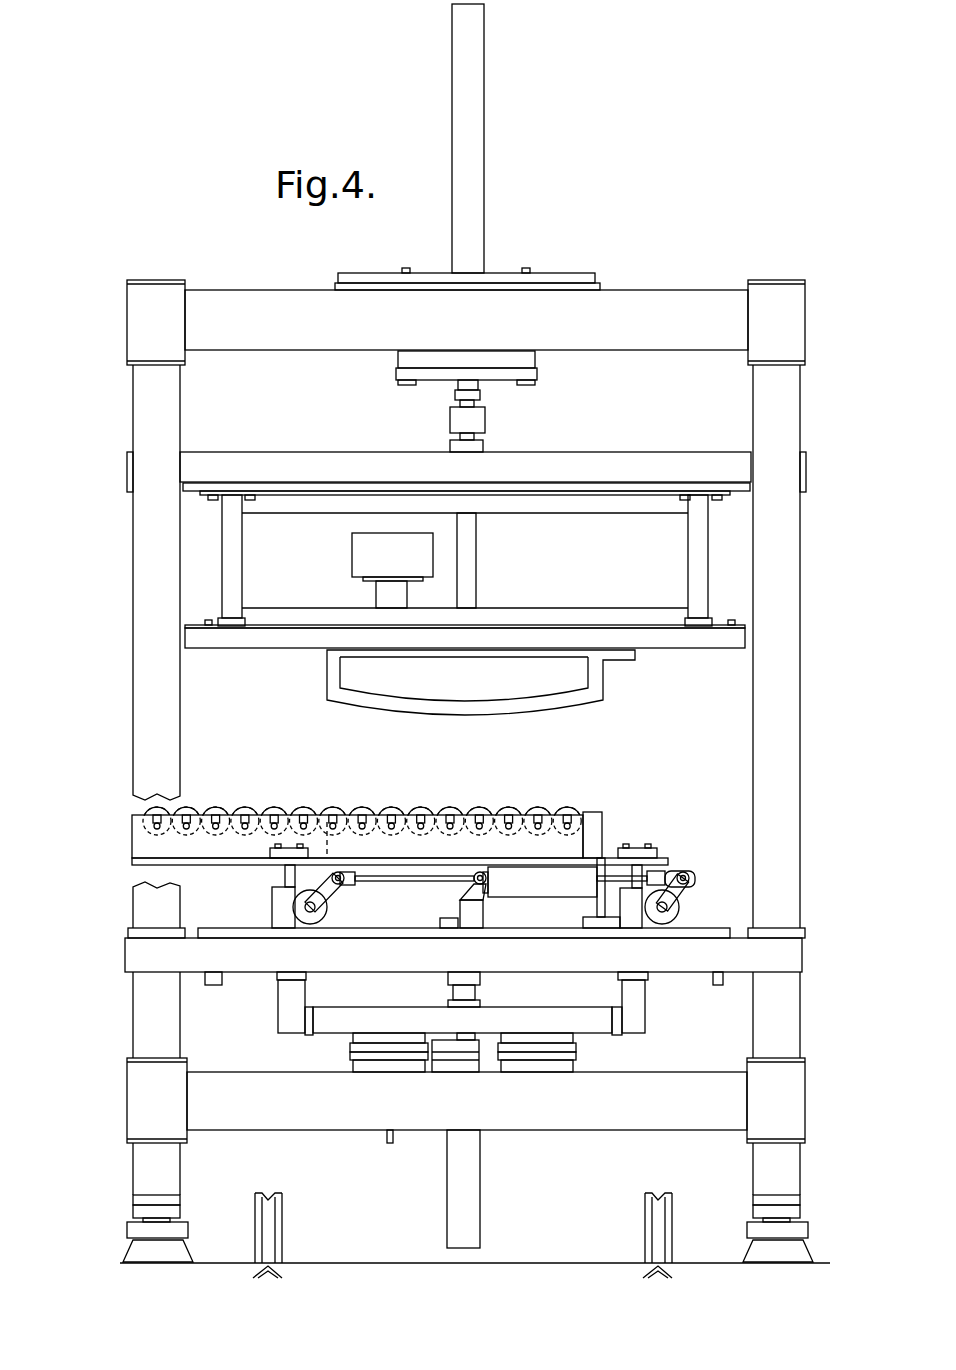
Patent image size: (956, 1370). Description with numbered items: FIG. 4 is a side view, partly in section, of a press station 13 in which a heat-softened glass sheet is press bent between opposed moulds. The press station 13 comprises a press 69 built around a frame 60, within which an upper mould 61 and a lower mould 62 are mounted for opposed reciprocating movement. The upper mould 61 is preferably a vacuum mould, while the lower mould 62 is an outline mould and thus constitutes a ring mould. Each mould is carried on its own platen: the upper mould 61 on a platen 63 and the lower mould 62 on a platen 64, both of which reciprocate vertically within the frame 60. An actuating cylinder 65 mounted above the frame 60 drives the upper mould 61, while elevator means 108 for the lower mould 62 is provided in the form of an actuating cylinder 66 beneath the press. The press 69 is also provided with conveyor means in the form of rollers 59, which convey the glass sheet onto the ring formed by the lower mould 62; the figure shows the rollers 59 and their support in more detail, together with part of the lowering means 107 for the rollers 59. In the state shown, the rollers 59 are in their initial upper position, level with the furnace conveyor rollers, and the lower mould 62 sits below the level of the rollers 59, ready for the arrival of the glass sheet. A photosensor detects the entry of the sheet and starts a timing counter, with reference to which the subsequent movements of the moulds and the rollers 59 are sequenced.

The press bending station 13 is at (521, 78).
The actuating cylinder 65 is at (468, 127).
The press 69 is at (558, 262).
The frame 60 is at (238, 302).
The platen 63 is at (578, 470).
The upper mould 61 is at (598, 692).
The lower mould 62 is at (431, 856).
The rollers 59 is at (215, 812).
The lowering means 107 is at (710, 870).
The platen 64 is at (671, 958).
The actuating cylinder 66 is at (470, 1197).
The elevator means 108 is at (520, 1193).